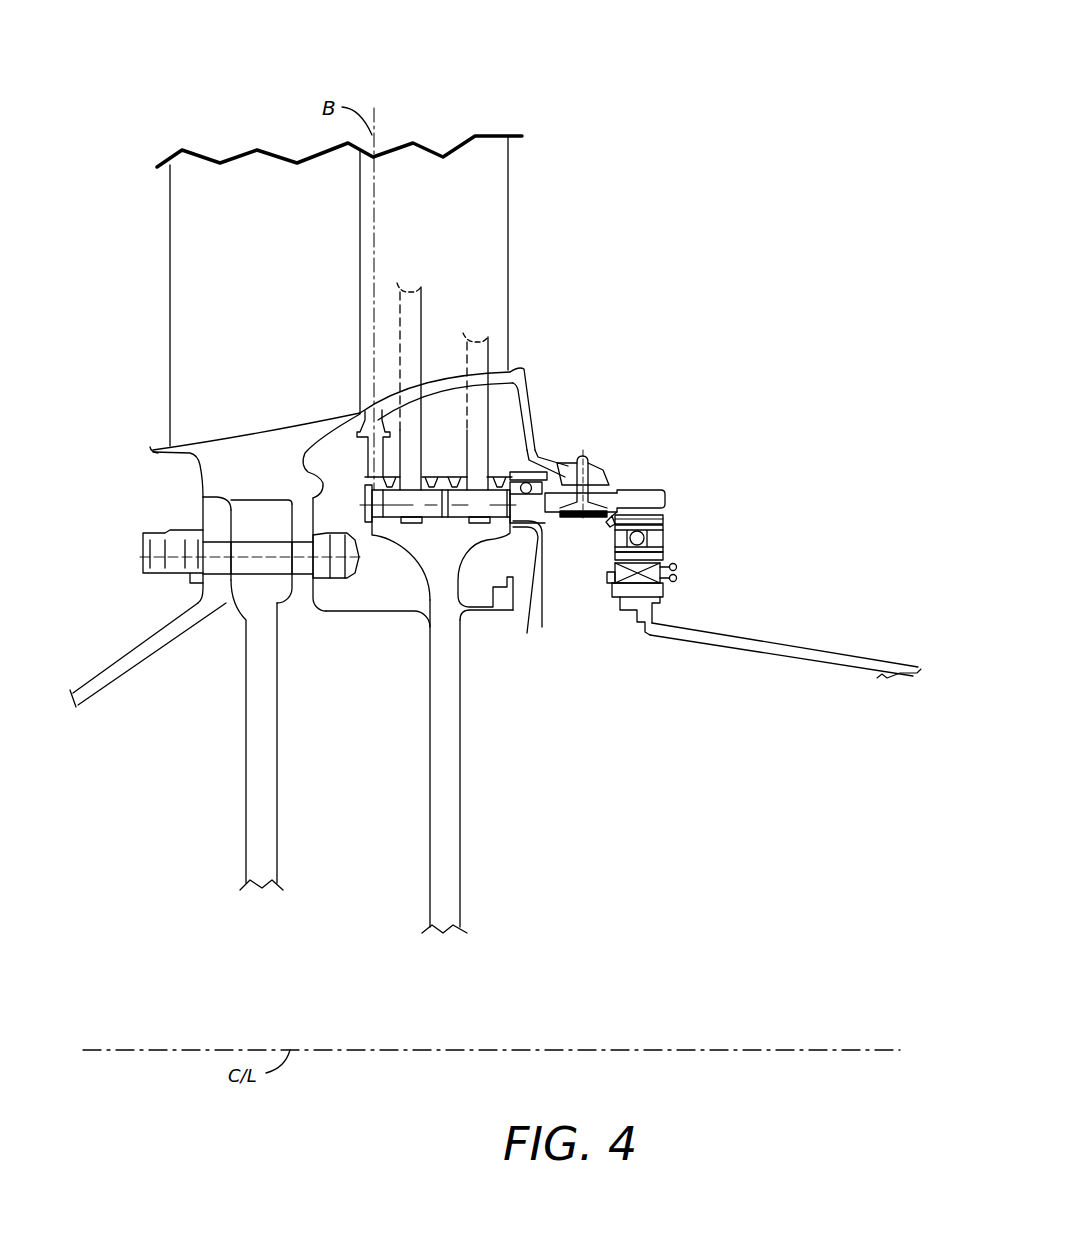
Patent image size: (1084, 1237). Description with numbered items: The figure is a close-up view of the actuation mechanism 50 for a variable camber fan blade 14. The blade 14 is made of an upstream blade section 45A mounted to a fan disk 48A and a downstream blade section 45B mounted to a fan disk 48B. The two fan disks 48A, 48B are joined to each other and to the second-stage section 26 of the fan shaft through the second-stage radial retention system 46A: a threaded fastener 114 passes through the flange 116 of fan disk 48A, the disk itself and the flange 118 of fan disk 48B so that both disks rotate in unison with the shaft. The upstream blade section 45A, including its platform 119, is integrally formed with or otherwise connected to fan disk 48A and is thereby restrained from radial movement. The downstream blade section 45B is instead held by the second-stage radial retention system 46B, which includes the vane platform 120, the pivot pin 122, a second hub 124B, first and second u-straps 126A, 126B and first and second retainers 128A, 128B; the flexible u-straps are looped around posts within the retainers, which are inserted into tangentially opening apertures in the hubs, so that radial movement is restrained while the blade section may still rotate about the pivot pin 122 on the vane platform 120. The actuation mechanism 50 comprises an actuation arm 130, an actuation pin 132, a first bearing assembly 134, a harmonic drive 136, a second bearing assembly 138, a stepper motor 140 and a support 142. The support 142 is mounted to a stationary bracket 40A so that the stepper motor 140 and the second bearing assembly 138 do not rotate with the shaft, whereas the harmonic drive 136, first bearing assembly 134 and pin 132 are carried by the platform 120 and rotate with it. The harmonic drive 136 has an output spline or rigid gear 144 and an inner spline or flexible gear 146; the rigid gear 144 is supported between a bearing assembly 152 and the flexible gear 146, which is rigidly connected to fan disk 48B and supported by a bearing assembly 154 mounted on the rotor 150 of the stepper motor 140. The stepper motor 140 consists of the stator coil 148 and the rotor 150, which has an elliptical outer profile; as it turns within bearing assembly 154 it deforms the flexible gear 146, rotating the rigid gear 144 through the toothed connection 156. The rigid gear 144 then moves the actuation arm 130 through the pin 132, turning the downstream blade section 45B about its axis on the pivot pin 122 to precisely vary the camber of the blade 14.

The variable camber fan blade 14 is at (468, 100).
The second-stage section of shaft 26 is at (150, 650).
The bracket 40A is at (840, 665).
The upstream blade section 45A is at (280, 263).
The downstream blade section 45B is at (480, 201).
The second-stage radial retention system 46A is at (168, 500).
The second-stage radial retention system 46B is at (386, 566).
The fan disk 48A is at (267, 827).
The fan disk 48B is at (450, 862).
The actuation mechanism 50 is at (735, 471).
The threaded fastener 114 is at (170, 562).
The flange of fan disk 48A 116 is at (217, 510).
The flange of fan disk 48B 118 is at (300, 600).
The platform 119 is at (153, 450).
The vane platform 120 is at (505, 377).
The pivot pin 122 is at (373, 408).
The second hub 124B is at (500, 462).
The first u-strap 126A is at (417, 427).
The second u-strap 126B is at (477, 400).
The first retainer 128A is at (430, 520).
The second retainer 128B is at (462, 520).
The actuation arm 130 is at (548, 460).
The actuation pin 132 is at (590, 470).
The first bearing assembly 134 is at (523, 458).
The harmonic drive 136 is at (668, 500).
The second bearing assembly 138 is at (669, 542).
The stepper motor 140 is at (693, 572).
The support 142 is at (663, 594).
The output spline/rigid gear 144 is at (645, 490).
The inner spline/flexible gear 146 is at (613, 525).
The stator coil 148 is at (619, 590).
The rotor 150 is at (615, 576).
The bearing assembly 152 is at (521, 587).
The bearing assembly 154 is at (613, 554).
The toothed connection 156 is at (678, 518).